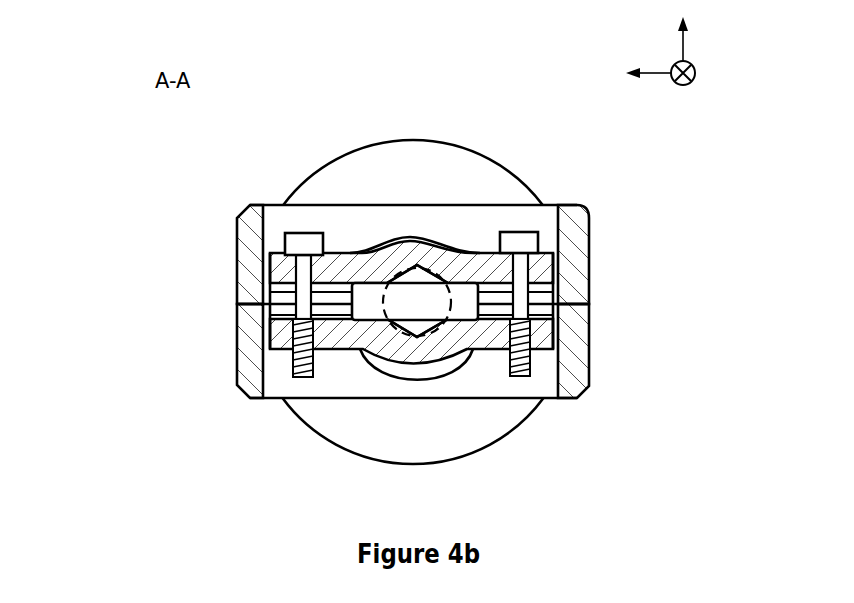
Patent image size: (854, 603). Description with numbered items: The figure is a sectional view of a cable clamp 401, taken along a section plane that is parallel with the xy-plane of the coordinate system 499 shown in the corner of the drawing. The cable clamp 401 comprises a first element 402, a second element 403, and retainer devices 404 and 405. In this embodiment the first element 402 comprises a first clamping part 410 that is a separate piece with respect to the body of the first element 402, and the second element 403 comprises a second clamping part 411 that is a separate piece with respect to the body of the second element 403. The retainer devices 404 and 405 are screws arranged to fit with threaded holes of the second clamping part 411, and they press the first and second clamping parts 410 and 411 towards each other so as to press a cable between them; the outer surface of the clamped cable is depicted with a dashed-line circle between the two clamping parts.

The cable clamp 401 is at (130, 288).
The first element 402 is at (237, 257).
The second element 403 is at (590, 357).
The retainer device 404 is at (521, 233).
The retainer device 405 is at (300, 231).
The first clamping part 410 is at (338, 253).
The second clamping part 411 is at (492, 352).
The coordinate system 499 is at (658, 47).